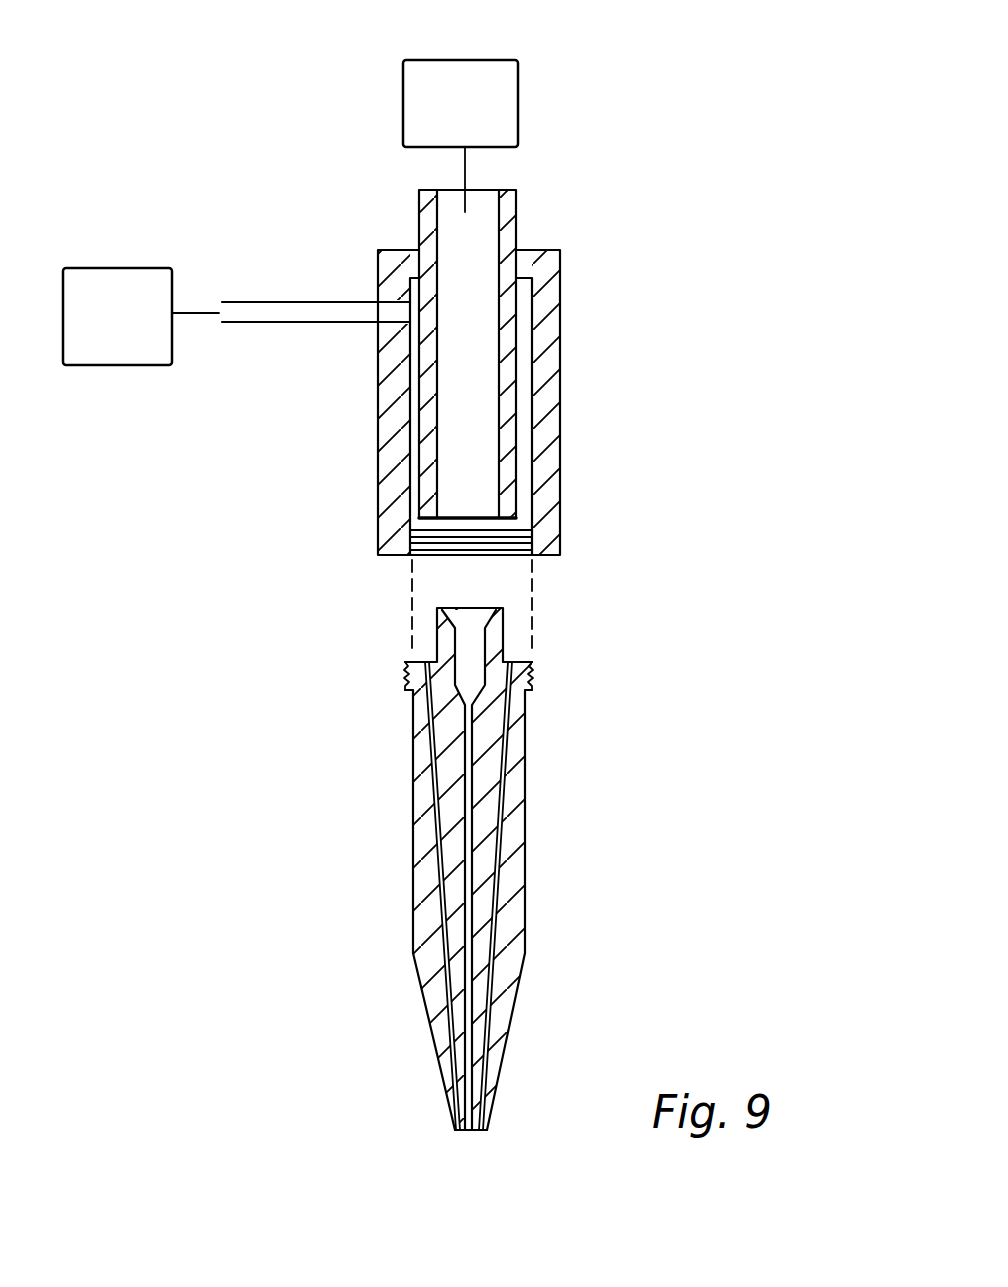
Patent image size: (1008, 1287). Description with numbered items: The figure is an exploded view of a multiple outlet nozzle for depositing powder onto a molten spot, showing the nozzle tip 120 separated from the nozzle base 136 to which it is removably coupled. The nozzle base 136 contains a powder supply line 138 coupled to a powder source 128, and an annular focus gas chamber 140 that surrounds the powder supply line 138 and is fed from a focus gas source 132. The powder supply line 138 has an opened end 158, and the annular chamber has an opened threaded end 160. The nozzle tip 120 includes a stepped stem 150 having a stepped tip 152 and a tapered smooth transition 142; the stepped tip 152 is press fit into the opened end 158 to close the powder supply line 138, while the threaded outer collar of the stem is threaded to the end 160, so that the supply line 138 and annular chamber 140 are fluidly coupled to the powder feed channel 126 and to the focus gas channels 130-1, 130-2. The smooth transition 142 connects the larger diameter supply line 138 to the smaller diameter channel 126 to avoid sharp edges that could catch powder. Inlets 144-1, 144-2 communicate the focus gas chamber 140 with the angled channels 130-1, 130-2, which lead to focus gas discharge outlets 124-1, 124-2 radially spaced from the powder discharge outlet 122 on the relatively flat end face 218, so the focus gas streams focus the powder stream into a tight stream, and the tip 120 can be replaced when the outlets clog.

The nozzle tip 120 is at (490, 892).
The powder discharge outlet 122 is at (467, 1133).
The focus gas discharge outlet 124-1 is at (457, 1131).
The focus gas discharge outlet 124-2 is at (485, 1131).
The powder feed channel 126 is at (470, 794).
The powder source 128 is at (482, 52).
The focus gas channel 130-1 is at (436, 825).
The focus gas channel 130-2 is at (500, 900).
The focus gas source 132 is at (124, 266).
The nozzle base 136 is at (586, 326).
The powder supply line 138 is at (490, 314).
The annular focus gas chamber 140 is at (414, 409).
The tapered smooth transition 142 is at (475, 640).
The inlet 144-1 is at (428, 660).
The inlet 144-2 is at (520, 656).
The stepped stem 150 is at (540, 670).
The stepped tip 152 is at (433, 616).
The opened end 158 is at (503, 487).
The opened threaded end 160 is at (412, 545).
The flat end face 218 is at (465, 1133).